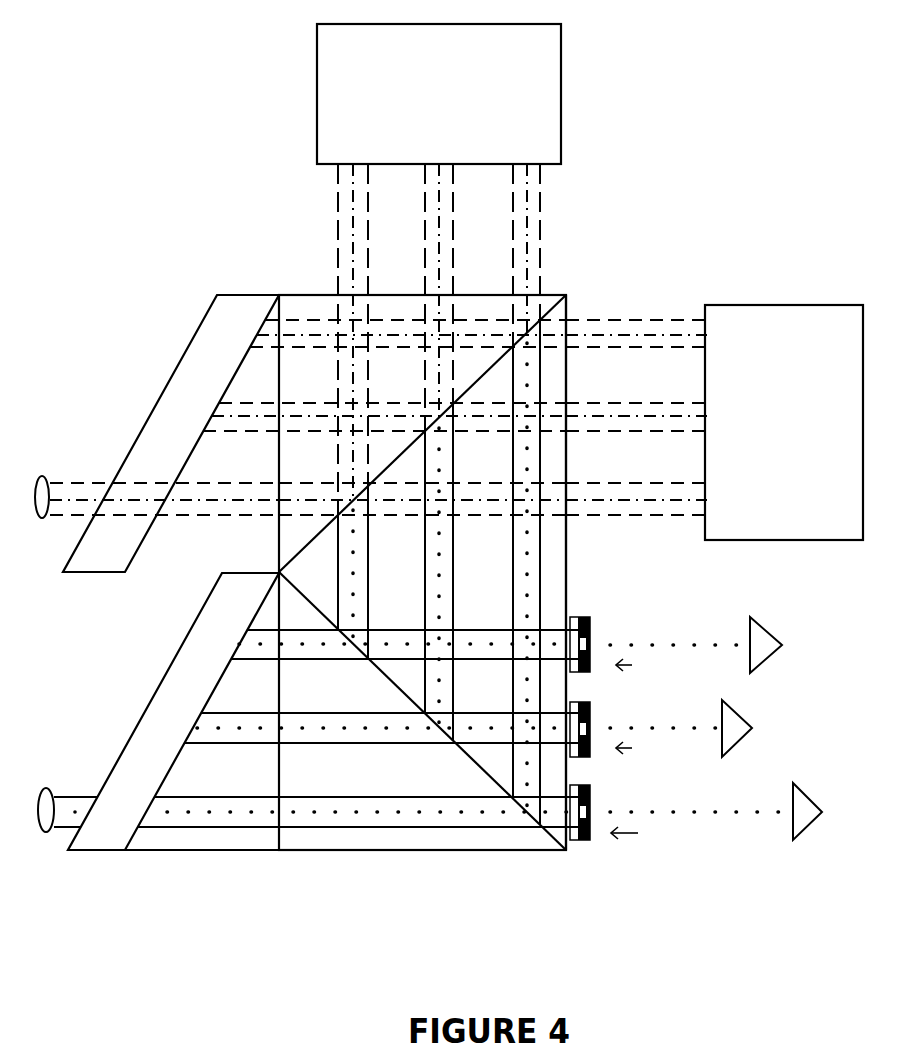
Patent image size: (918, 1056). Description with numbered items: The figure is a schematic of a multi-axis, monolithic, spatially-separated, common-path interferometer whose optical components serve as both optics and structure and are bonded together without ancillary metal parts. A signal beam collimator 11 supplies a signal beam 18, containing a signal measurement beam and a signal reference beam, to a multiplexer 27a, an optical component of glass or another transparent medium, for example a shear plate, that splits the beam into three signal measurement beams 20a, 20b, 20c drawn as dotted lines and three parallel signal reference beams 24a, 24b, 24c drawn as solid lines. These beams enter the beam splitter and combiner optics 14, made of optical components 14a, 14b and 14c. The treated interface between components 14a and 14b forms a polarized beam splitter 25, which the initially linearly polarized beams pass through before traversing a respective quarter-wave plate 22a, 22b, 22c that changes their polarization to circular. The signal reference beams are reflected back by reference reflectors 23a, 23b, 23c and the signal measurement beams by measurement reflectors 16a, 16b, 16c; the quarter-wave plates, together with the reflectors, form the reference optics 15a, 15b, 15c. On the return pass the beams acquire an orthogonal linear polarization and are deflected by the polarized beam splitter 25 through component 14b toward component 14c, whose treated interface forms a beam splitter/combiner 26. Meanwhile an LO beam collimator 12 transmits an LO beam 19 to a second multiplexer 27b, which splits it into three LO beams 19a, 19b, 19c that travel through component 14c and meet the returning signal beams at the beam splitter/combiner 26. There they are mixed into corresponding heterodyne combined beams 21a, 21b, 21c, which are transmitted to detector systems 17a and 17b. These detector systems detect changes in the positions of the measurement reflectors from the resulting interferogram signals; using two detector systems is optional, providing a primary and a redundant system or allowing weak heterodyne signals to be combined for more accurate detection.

The signal beam collimator 11 is at (40, 797).
The LO beam collimator 12 is at (36, 481).
The beam splitter and combiner optics 14 is at (639, 245).
The optical component 14a is at (340, 851).
The optical component 14b is at (566, 570).
The optical component 14c is at (302, 293).
The reference optics 15a is at (639, 667).
The reference optics 15b is at (639, 750).
The reference optics 15c is at (639, 834).
The measurement reflector 16a is at (789, 629).
The measurement reflector 16b is at (752, 728).
The measurement reflector 16c is at (822, 812).
The detector system 17a is at (517, 24).
The detector system 17b is at (817, 305).
The signal beam 18 is at (72, 790).
The LO beam 19 is at (164, 488).
The LO beam 19a is at (382, 515).
The LO beam 19b is at (384, 433).
The LO beam 19c is at (405, 348).
The signal measurement beam 20a is at (674, 634).
The signal measurement beam 20b is at (663, 717).
The signal measurement beam 20c is at (694, 801).
The heterodyne combined beam 21a is at (522, 411).
The heterodyne combined beam 21b is at (566, 452).
The heterodyne combined beam 21c is at (610, 494).
The quarter-wave plate 22a is at (578, 617).
The quarter-wave plate 22b is at (578, 702).
The quarter-wave plate 22c is at (578, 785).
The reference reflector 23a is at (590, 627).
The reference reflector 23b is at (590, 710).
The reference reflector 23c is at (590, 793).
The signal reference beam 24a is at (404, 646).
The signal reference beam 24b is at (381, 729).
The signal reference beam 24c is at (358, 813).
The polarized beam splitter 25 is at (566, 850).
The beam splitter/combiner 26 is at (566, 295).
The multiplexer 27a is at (107, 850).
The multiplexer 27b is at (100, 572).